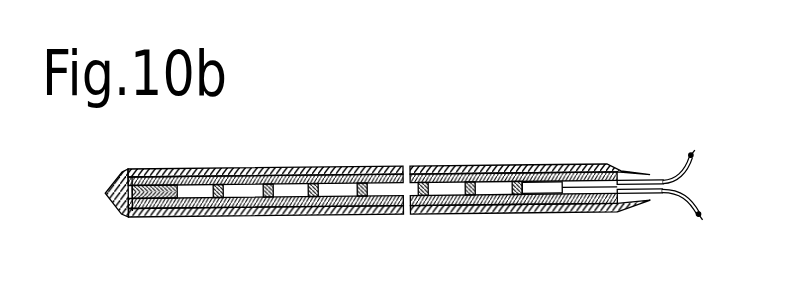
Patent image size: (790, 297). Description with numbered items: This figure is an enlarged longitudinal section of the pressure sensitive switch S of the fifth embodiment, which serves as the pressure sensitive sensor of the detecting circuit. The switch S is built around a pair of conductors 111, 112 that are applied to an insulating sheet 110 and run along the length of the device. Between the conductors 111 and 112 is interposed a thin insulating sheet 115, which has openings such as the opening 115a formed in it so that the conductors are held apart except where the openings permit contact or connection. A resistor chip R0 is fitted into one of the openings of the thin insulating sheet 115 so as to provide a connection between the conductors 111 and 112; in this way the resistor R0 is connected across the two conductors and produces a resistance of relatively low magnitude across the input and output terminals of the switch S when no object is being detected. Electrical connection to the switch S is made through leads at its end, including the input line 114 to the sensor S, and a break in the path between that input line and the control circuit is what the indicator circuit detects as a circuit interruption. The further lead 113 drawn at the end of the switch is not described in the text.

The insulating sheet 110 is at (547, 212).
The conductor 111 is at (273, 217).
The conductor 112 is at (253, 168).
The lead wire 113 is at (645, 200).
The input line 114 is at (654, 179).
The thin insulating sheet 115 is at (315, 208).
The opening 115a is at (455, 210).
The pressure sensitive switch S is at (473, 166).
The resistor R0 is at (162, 168).